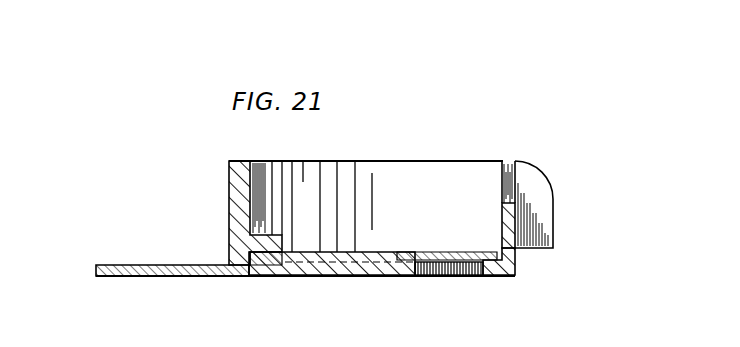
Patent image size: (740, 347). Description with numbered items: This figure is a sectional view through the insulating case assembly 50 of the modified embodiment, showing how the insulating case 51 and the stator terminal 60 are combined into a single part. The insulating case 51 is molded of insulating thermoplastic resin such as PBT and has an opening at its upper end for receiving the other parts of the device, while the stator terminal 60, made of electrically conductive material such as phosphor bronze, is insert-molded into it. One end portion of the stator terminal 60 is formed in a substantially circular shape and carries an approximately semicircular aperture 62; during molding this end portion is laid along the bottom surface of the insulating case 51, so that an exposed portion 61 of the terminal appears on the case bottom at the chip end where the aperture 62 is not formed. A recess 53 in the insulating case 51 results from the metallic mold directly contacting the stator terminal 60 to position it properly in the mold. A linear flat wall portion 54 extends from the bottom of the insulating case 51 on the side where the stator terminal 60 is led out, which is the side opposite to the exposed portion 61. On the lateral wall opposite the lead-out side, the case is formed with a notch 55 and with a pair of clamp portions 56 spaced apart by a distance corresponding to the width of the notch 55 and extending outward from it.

The insulating case assembly 50 is at (443, 140).
The insulating case 51 is at (226, 188).
The recess 53 is at (433, 276).
The linear flat wall portion 54 is at (290, 234).
The notch 55 is at (510, 203).
The clamp portion 56 is at (545, 187).
The stator terminal 60 is at (159, 263).
The exposed portion 61 is at (452, 251).
The aperture 62 is at (390, 252).